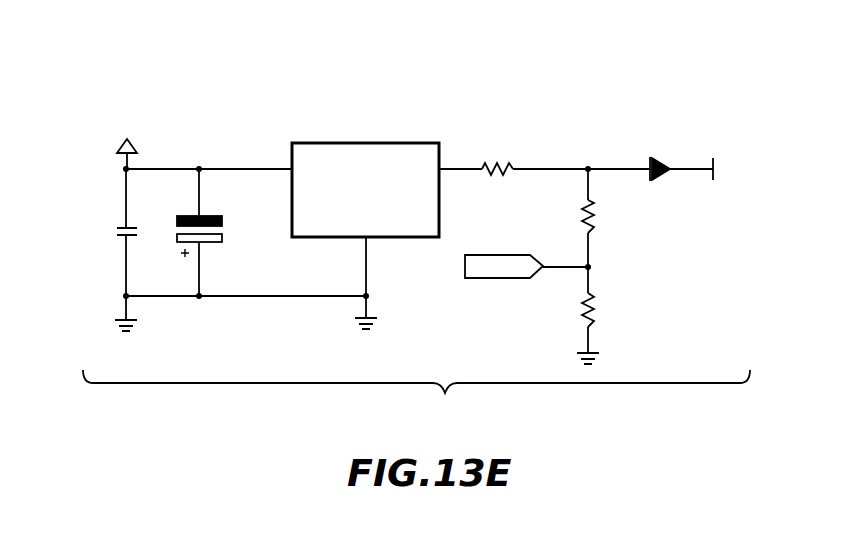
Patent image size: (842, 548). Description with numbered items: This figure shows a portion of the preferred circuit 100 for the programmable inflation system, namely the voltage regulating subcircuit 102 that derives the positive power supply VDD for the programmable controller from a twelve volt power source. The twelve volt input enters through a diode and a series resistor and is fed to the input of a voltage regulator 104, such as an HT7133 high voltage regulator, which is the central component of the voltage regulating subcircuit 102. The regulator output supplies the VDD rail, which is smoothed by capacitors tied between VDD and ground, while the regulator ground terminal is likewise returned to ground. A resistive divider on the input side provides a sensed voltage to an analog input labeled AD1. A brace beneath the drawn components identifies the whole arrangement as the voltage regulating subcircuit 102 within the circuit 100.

The circuit 100 is at (738, 142).
The voltage regulating subcircuit 102 is at (416, 395).
The voltage regulator 104 is at (400, 143).